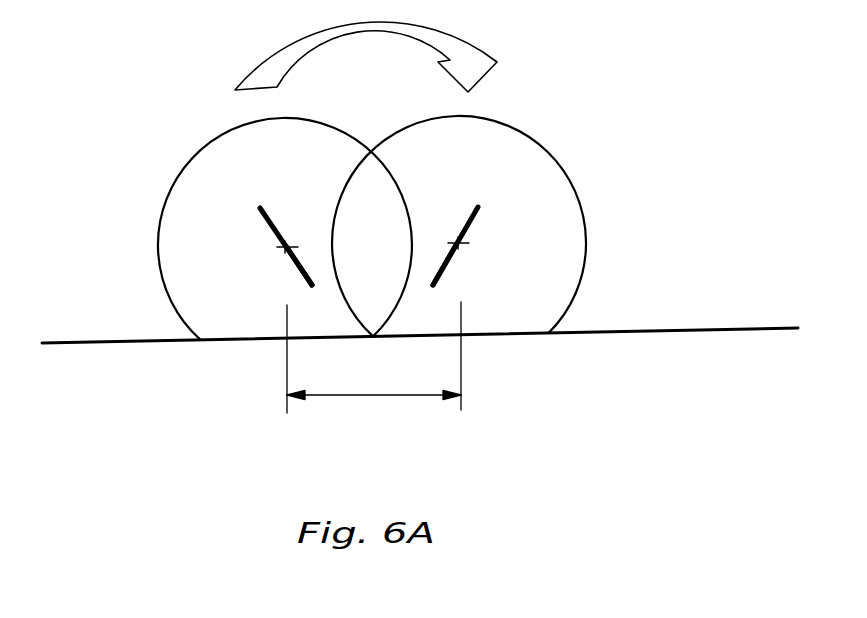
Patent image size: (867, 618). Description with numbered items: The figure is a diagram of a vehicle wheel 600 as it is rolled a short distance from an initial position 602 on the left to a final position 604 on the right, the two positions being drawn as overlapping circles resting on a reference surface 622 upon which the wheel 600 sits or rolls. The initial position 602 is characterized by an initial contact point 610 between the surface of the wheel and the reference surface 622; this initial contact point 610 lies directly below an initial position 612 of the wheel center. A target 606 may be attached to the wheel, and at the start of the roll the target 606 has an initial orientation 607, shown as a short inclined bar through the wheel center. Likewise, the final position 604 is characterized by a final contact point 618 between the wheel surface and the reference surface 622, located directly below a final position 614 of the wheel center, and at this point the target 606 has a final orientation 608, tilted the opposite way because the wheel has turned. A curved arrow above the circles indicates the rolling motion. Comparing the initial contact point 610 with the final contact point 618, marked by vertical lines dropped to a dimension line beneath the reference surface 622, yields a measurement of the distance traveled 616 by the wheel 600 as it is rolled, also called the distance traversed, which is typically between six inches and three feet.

The vehicle wheel 600 is at (200, 120).
The initial position 602 is at (165, 212).
The final position 604 is at (578, 192).
The target 606 is at (465, 210).
The initial orientation 607 is at (292, 268).
The final orientation 608 is at (452, 265).
The initial contact point 610 is at (287, 342).
The initial position of the wheel center 612 is at (284, 247).
The final position of the wheel center 614 is at (462, 243).
The distance traveled 616 is at (374, 411).
The final contact point 618 is at (467, 337).
The reference surface 622 is at (108, 341).